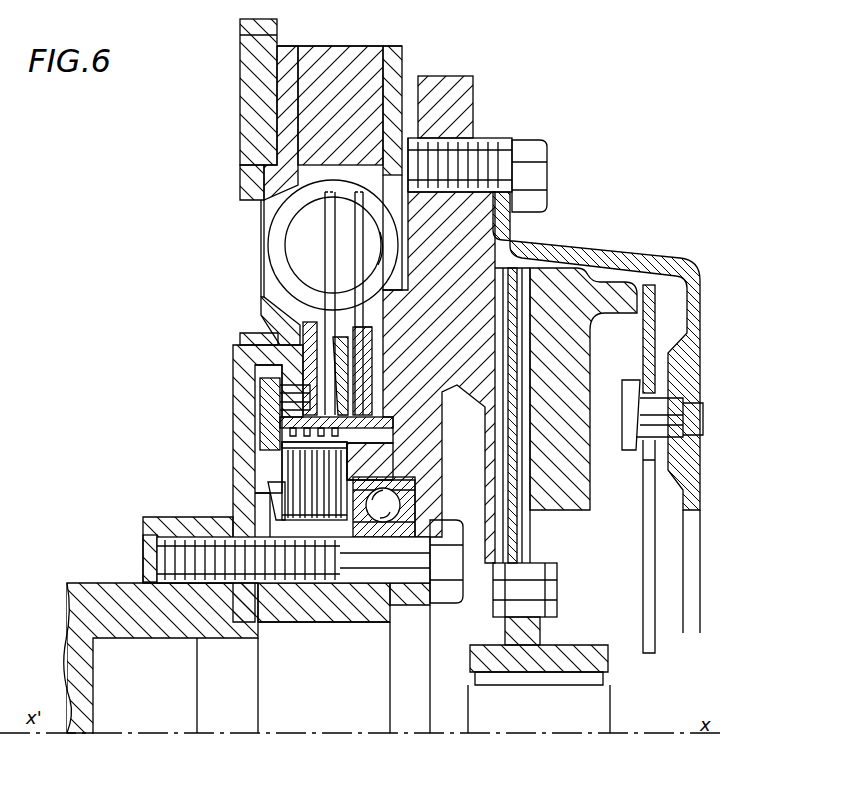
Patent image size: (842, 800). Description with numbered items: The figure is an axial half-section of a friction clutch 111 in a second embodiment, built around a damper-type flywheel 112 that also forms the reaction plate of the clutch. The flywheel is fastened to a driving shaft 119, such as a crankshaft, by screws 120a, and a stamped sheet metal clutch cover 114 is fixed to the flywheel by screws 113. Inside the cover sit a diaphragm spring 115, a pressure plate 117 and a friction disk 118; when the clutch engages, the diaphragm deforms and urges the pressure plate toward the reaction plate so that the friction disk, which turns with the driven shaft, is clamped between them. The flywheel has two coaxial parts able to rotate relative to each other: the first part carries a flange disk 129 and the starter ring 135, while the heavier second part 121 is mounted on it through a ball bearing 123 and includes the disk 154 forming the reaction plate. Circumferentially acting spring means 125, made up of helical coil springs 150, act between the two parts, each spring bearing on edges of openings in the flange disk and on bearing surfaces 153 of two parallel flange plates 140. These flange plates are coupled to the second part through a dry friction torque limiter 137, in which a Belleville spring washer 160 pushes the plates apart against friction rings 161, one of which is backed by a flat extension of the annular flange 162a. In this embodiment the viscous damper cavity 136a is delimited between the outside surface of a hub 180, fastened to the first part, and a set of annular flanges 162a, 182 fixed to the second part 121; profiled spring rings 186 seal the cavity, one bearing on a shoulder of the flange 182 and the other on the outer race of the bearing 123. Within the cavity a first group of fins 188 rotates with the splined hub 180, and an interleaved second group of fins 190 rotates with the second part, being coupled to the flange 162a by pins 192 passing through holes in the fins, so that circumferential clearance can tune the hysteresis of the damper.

The friction clutch 111 is at (578, 214).
The damper-type flywheel 112 is at (350, 42).
The screws 113 is at (482, 160).
The clutch cover 114 is at (675, 264).
The diaphragm spring 115 is at (655, 322).
The pressure plate 117 is at (594, 286).
The friction disk 118 is at (514, 508).
The driving shaft 119 is at (92, 580).
The screws 120a is at (372, 602).
The second part 121 is at (478, 118).
The ball bearing 123 is at (418, 482).
The circumferentially acting spring means 125 is at (258, 228).
The flange disk 129 is at (392, 62).
The starter ring 135 is at (262, 62).
The cavity 136a is at (268, 490).
The dry friction torque limiter 137 is at (272, 380).
The flange plates 140 is at (298, 338).
The helical coil springs 150 is at (272, 252).
The bearing surfaces 153 is at (352, 275).
The disk 154 is at (478, 334).
The spring means 160 is at (372, 332).
The friction rings 161 is at (300, 362).
The annular flange 162a is at (360, 418).
The hub 180 is at (316, 600).
The annular flange 182 is at (262, 430).
The profiled spring rings 186 is at (326, 534).
The first group of fins 188 is at (284, 460).
The second group of fins 190 is at (375, 472).
The pins 192 is at (348, 442).